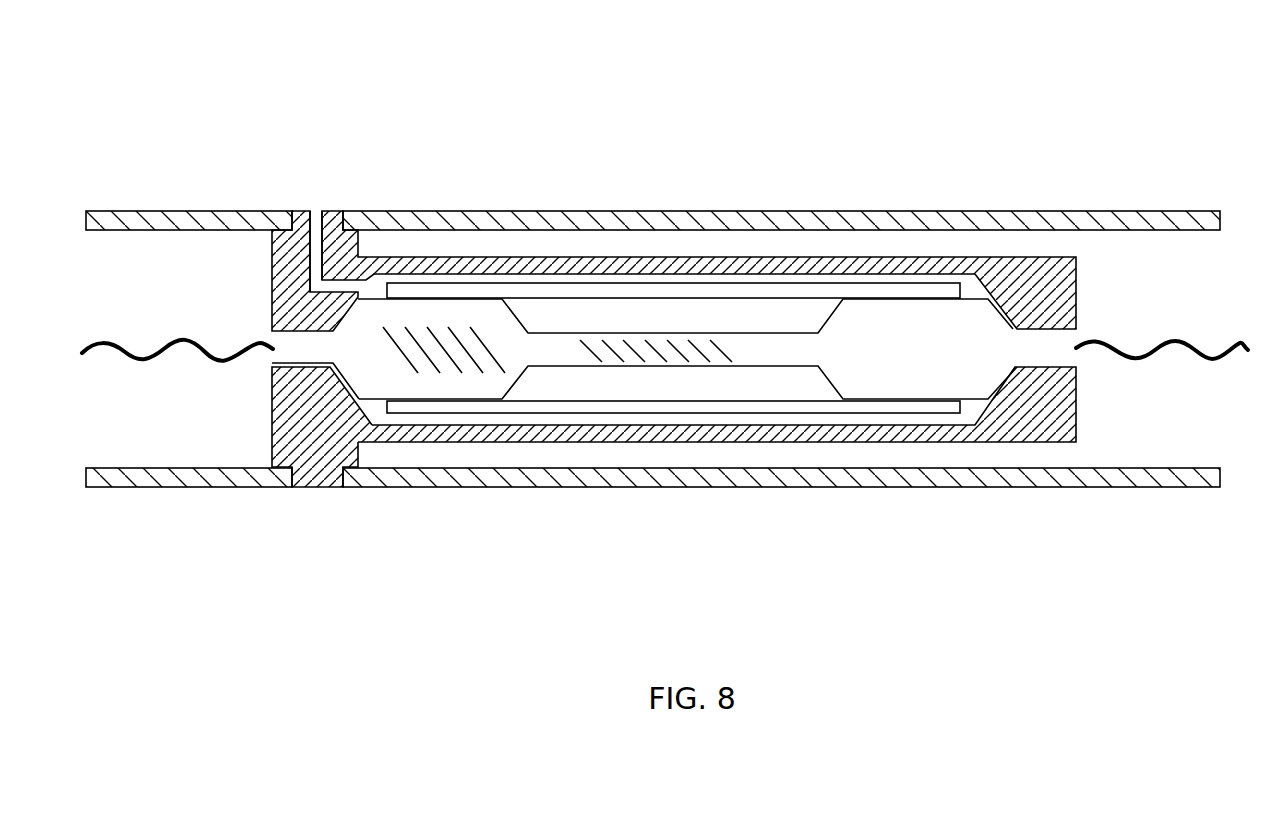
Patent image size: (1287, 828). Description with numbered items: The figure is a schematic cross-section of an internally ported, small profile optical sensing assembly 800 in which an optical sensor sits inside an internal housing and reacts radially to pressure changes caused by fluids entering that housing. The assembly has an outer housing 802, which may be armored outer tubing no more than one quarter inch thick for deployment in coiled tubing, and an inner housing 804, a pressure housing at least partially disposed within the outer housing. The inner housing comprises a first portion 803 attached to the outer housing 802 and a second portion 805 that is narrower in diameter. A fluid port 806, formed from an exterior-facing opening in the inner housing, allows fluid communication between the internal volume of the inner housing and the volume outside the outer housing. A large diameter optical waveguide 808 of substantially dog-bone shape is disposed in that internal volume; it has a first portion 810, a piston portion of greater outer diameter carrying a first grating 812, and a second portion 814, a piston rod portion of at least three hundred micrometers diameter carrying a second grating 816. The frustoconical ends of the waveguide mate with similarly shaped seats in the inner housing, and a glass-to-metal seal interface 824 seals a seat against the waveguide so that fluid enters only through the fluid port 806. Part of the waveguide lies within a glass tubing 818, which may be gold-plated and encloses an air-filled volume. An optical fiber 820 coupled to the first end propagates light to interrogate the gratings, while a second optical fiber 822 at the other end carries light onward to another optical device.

The sensing assembly 800 is at (1056, 112).
The outer housing 802 is at (1192, 478).
The first portion 803 is at (272, 490).
The inner housing 804 is at (1047, 420).
The second portion 805 is at (358, 490).
The fluid port 806 is at (316, 220).
The large diameter optical waveguide 808 is at (687, 223).
The first portion 810 is at (492, 315).
The first grating 812 is at (440, 333).
The second portion 814 is at (580, 333).
The second grating 816 is at (717, 347).
The glass tubing 818 is at (888, 290).
The optical fiber 820 is at (180, 346).
The second optical fiber 822 is at (1195, 350).
The glass-to-metal seal interface 824 is at (347, 384).